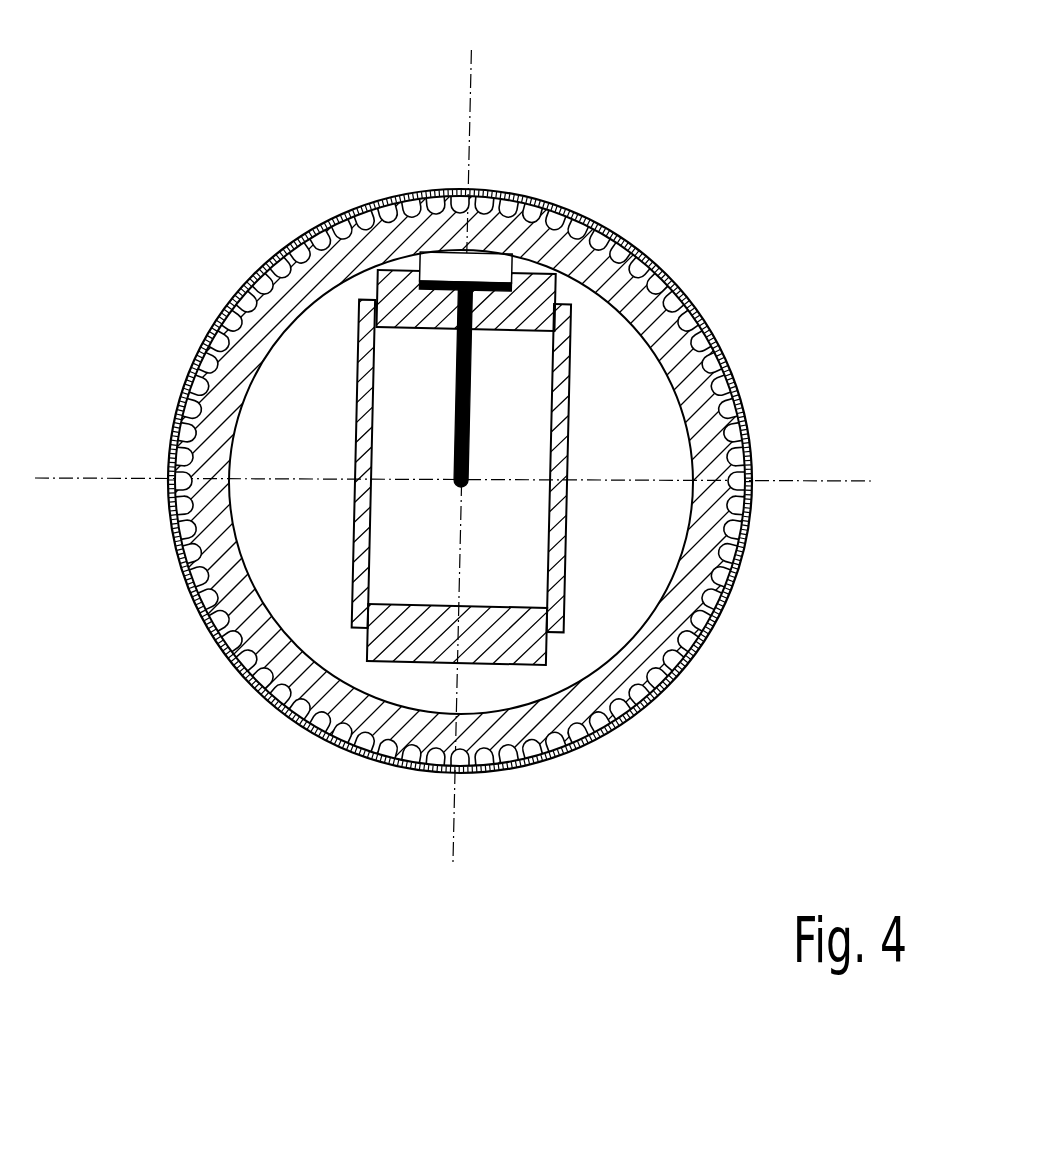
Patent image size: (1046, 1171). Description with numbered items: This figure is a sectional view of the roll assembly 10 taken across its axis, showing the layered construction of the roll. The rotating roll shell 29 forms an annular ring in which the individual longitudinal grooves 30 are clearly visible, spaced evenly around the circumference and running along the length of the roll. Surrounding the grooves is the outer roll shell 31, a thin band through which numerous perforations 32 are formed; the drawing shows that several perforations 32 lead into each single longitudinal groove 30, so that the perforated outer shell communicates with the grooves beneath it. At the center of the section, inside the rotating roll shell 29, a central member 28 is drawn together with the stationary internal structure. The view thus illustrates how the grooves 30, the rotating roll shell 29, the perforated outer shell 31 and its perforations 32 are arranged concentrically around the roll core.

The heat exchanger / burner assembly 10 is at (653, 138).
The ignition electrode 28 is at (482, 270).
The rotating roll shell 29 is at (674, 352).
The longitudinal grooves 30 is at (281, 254).
The outer shell 31 is at (755, 523).
The perforations 32 is at (750, 405).